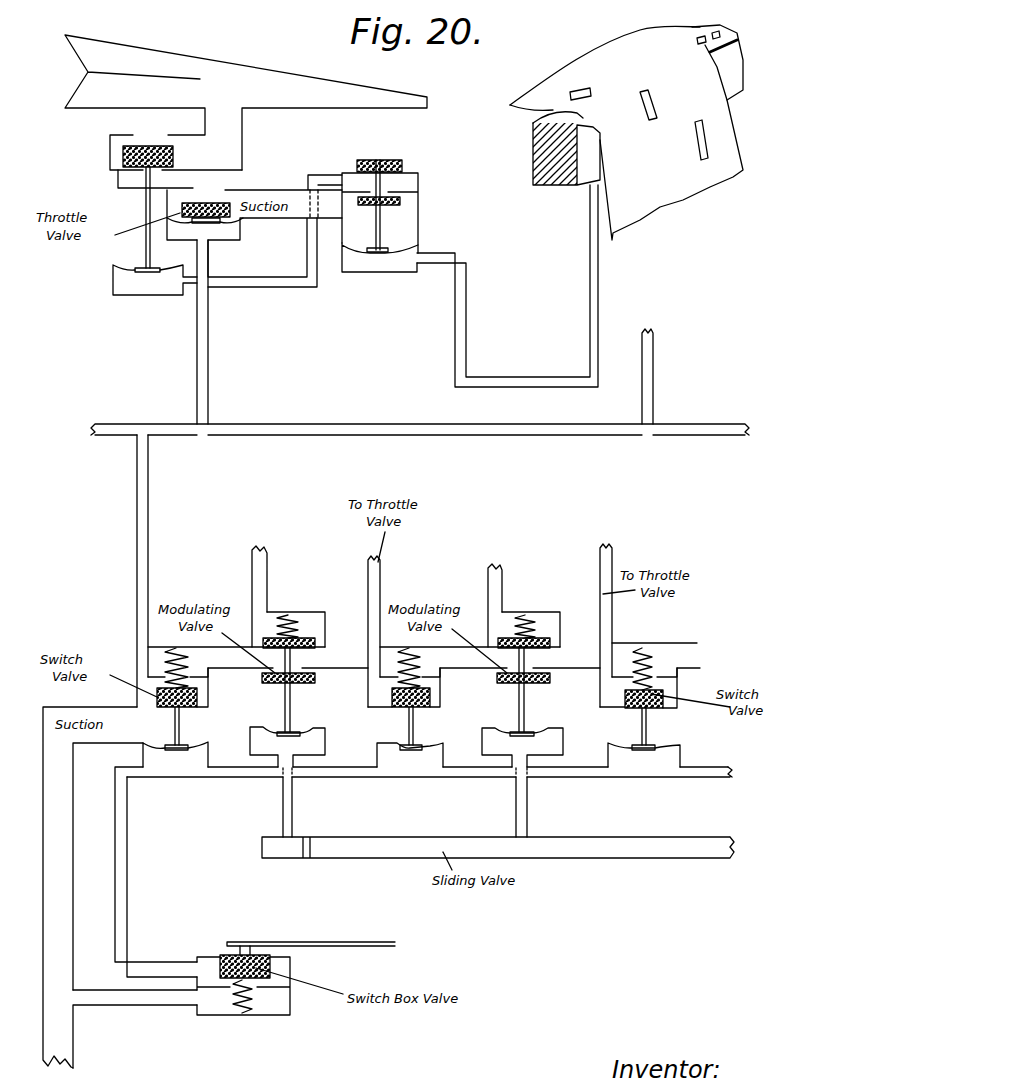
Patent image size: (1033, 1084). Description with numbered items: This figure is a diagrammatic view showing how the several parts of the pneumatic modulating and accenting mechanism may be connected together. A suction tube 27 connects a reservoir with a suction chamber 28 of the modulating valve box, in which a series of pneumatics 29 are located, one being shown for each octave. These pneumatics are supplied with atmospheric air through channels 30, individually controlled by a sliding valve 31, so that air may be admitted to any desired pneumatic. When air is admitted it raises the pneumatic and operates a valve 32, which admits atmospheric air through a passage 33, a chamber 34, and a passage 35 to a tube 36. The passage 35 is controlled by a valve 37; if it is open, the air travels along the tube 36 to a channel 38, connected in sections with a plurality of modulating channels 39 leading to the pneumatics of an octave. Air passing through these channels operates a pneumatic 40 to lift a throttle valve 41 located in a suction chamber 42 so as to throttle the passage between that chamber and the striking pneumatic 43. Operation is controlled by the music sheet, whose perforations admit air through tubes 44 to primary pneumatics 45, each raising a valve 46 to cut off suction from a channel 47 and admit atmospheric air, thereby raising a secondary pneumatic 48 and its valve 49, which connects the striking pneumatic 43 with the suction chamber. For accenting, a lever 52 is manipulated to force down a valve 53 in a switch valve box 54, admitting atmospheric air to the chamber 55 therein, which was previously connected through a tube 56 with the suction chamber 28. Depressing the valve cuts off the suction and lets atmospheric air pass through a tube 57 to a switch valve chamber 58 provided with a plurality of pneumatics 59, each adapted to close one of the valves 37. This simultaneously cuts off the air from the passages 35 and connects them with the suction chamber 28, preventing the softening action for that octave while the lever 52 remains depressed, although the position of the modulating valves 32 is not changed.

The suction tube 27 is at (58, 853).
The suction chamber 28 is at (233, 733).
The pneumatics 29 is at (312, 728).
The channels 30 is at (290, 820).
The sliding valve 31 is at (675, 849).
The valve 32 is at (318, 668).
The passage 33 is at (263, 577).
The chamber 34 is at (308, 628).
The passage 35 is at (240, 660).
The tube 36 is at (137, 575).
The valve 37 is at (185, 703).
The channel 38 is at (345, 430).
The modulating channels 39 is at (203, 373).
The pneumatic 40 is at (224, 221).
The throttle valve 41 is at (212, 208).
The suction chamber 42 is at (272, 212).
The striking pneumatic 43 is at (88, 103).
The tubes 44 is at (507, 381).
The primary pneumatics 45 is at (407, 249).
The valve 46 is at (392, 205).
The channel 47 is at (300, 286).
The secondary pneumatic 48 is at (173, 272).
The valve 49 is at (173, 156).
The lever 52 is at (353, 942).
The valve 53 is at (216, 956).
The switch valve box 54 is at (291, 962).
The chamber 55 is at (278, 981).
The tube 56 is at (143, 1002).
The tube 57 is at (120, 885).
The switch valve chamber 58 is at (357, 773).
The pneumatics 59 is at (200, 749).